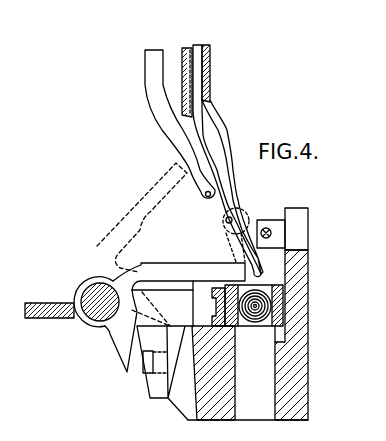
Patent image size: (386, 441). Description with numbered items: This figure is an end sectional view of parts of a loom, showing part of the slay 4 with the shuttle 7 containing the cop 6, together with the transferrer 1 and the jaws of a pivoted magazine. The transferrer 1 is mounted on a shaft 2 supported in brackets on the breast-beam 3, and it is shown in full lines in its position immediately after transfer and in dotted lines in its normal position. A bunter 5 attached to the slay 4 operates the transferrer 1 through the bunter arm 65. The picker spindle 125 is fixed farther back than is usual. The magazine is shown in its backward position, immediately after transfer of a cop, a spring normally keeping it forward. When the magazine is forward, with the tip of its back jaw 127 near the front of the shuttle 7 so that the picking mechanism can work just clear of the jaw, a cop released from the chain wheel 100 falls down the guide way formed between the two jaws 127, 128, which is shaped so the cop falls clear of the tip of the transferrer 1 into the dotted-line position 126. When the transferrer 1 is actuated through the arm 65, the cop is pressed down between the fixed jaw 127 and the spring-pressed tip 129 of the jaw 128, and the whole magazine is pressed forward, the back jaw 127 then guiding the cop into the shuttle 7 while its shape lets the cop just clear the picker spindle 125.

The chain wheel 100 is at (182, 48).
The jaw 128 is at (153, 106).
The back jaw 127 is at (229, 123).
The spring-pressed tip 129 is at (205, 197).
The cop position 126 is at (233, 217).
The picker spindle 125 is at (268, 227).
The transferrer 1 is at (150, 189).
The shaft 2 is at (96, 292).
The breast-beam 3 is at (60, 318).
The bunter arm 65 is at (126, 335).
The bunter 5 is at (151, 339).
The shuttle 7 is at (236, 324).
The cop 6 is at (258, 311).
The slay 4 is at (294, 344).